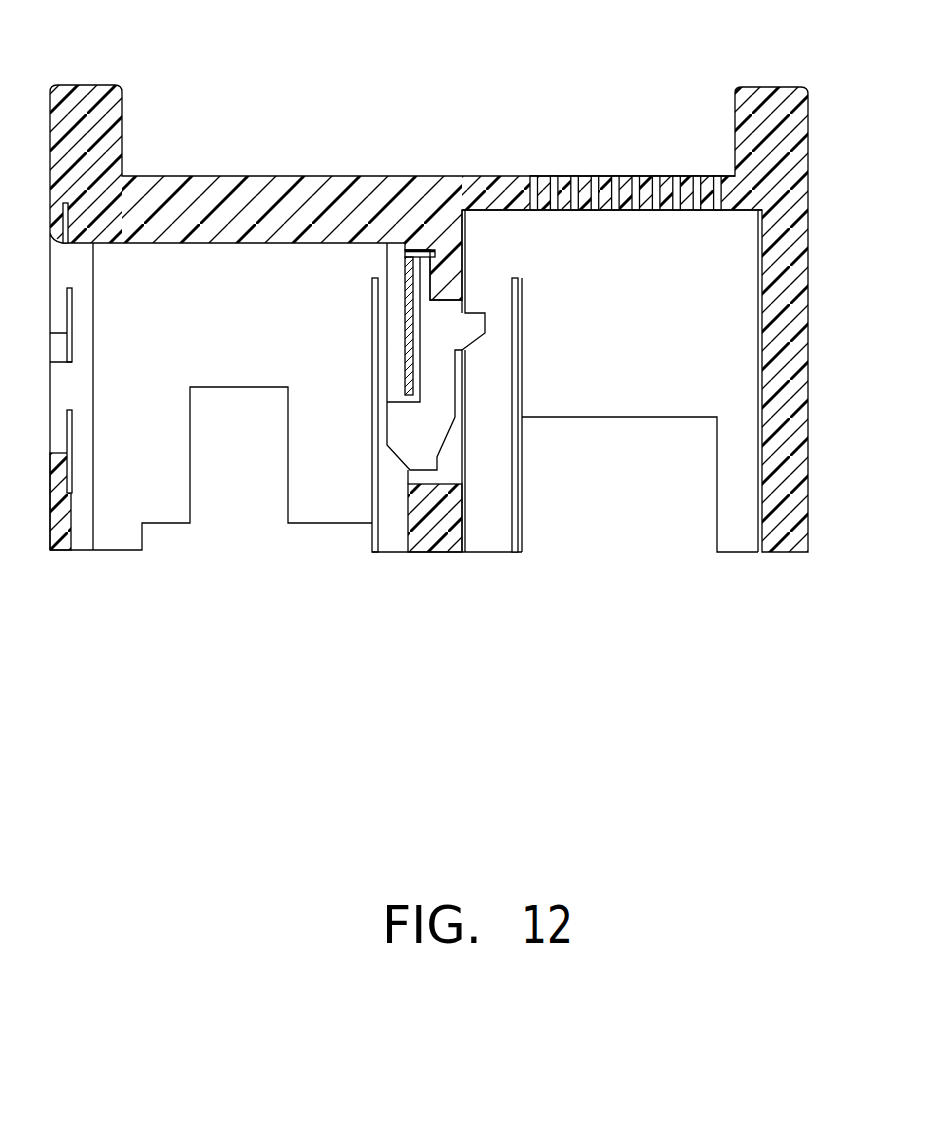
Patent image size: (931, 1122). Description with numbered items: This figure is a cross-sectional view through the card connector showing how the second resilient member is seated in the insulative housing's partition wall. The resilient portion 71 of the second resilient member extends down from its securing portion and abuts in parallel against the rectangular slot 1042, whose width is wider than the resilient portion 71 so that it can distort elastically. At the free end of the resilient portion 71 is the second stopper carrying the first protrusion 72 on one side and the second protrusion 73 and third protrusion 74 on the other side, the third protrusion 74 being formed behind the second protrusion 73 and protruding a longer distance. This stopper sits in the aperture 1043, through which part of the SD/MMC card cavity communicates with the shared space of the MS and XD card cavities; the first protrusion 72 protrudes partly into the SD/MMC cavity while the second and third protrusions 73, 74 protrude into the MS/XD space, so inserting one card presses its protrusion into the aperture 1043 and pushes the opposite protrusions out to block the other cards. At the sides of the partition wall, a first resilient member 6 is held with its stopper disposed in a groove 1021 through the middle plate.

The groove 1021 is at (372, 298).
The resilient portion 71 is at (418, 278).
The rectangular slot 1042 is at (466, 215).
The third protrusion 74 is at (472, 325).
The first resilient member 6 is at (372, 447).
The first protrusion 72 is at (412, 453).
The second protrusion 73 is at (443, 437).
The aperture 1043 is at (450, 470).